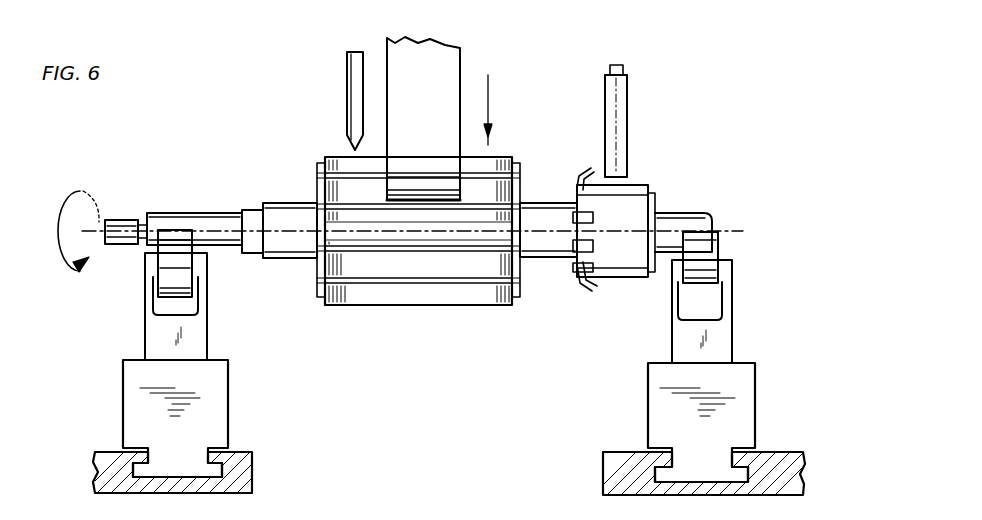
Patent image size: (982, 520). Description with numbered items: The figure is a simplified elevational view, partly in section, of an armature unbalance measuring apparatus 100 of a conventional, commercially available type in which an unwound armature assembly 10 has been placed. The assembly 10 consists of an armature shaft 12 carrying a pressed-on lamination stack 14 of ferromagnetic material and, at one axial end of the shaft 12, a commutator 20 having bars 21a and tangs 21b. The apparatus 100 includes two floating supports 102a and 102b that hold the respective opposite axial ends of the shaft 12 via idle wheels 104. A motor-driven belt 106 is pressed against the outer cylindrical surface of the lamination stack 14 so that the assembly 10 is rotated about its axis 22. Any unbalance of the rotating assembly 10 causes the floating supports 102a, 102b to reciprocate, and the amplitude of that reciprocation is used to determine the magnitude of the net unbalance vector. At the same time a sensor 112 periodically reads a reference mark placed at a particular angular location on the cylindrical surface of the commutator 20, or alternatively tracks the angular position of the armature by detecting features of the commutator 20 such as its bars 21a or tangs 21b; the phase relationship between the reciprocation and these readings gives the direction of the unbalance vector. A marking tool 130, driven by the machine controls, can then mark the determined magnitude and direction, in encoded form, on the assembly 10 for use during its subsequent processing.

The armature assembly 10 is at (270, 186).
The armature shaft 12 is at (697, 222).
The lamination stack 14 is at (467, 310).
The commutator 20 is at (610, 270).
The commutator bars 21a is at (640, 203).
The commutator tangs 21b is at (580, 274).
The axis 22 is at (91, 222).
The unbalance measuring apparatus 100 is at (516, 60).
The floating support 102a is at (213, 408).
The floating support 102b is at (740, 392).
The idle wheels 104 is at (208, 290).
The motor-driven belt 106 is at (447, 68).
The sensor 112 is at (617, 138).
The marking tool 130 is at (352, 88).